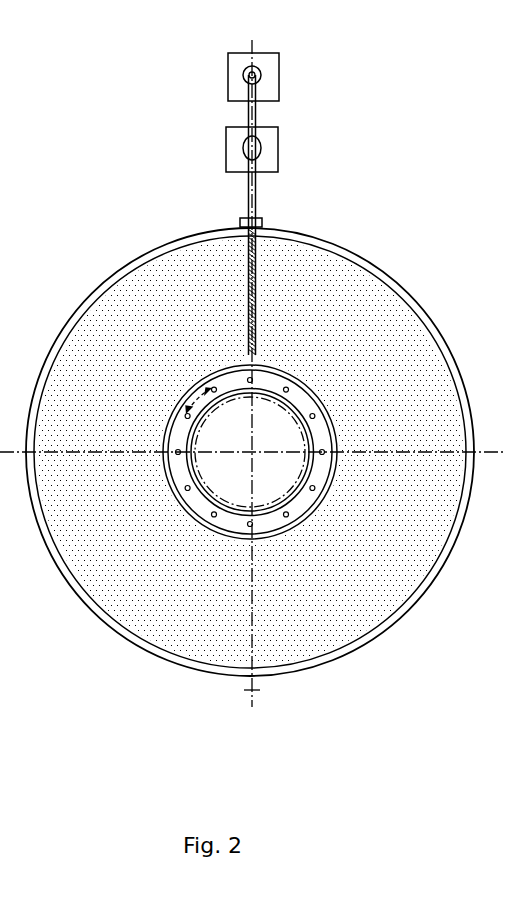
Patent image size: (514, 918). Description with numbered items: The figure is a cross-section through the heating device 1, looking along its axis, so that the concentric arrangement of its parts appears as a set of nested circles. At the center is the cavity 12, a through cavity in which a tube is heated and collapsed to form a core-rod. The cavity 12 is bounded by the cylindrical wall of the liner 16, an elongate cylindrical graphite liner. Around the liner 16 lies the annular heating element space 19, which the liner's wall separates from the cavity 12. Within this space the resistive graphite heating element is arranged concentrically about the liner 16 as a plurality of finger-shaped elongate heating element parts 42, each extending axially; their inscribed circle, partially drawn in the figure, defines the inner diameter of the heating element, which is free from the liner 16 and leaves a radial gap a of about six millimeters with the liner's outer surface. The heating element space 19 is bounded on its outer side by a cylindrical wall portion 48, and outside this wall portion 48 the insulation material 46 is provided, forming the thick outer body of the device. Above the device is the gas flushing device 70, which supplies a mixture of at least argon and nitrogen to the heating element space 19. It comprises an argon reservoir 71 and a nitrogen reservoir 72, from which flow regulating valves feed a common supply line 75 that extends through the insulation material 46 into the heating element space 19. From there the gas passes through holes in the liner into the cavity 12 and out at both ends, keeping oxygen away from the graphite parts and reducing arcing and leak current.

The heating device 1 is at (445, 146).
The cavity 12 is at (234, 484).
The liner 16 is at (302, 396).
The heating element space 19 is at (306, 463).
The elongate heating element parts 42 is at (217, 386).
The insulation material 46 is at (225, 608).
The cylindrical wall portion 48 is at (278, 382).
The gas flushing device 70 is at (329, 199).
The argon reservoir 71 is at (270, 76).
The nitrogen reservoir 72 is at (279, 143).
The common supply line 75 is at (256, 192).
The radial gap a is at (188, 389).